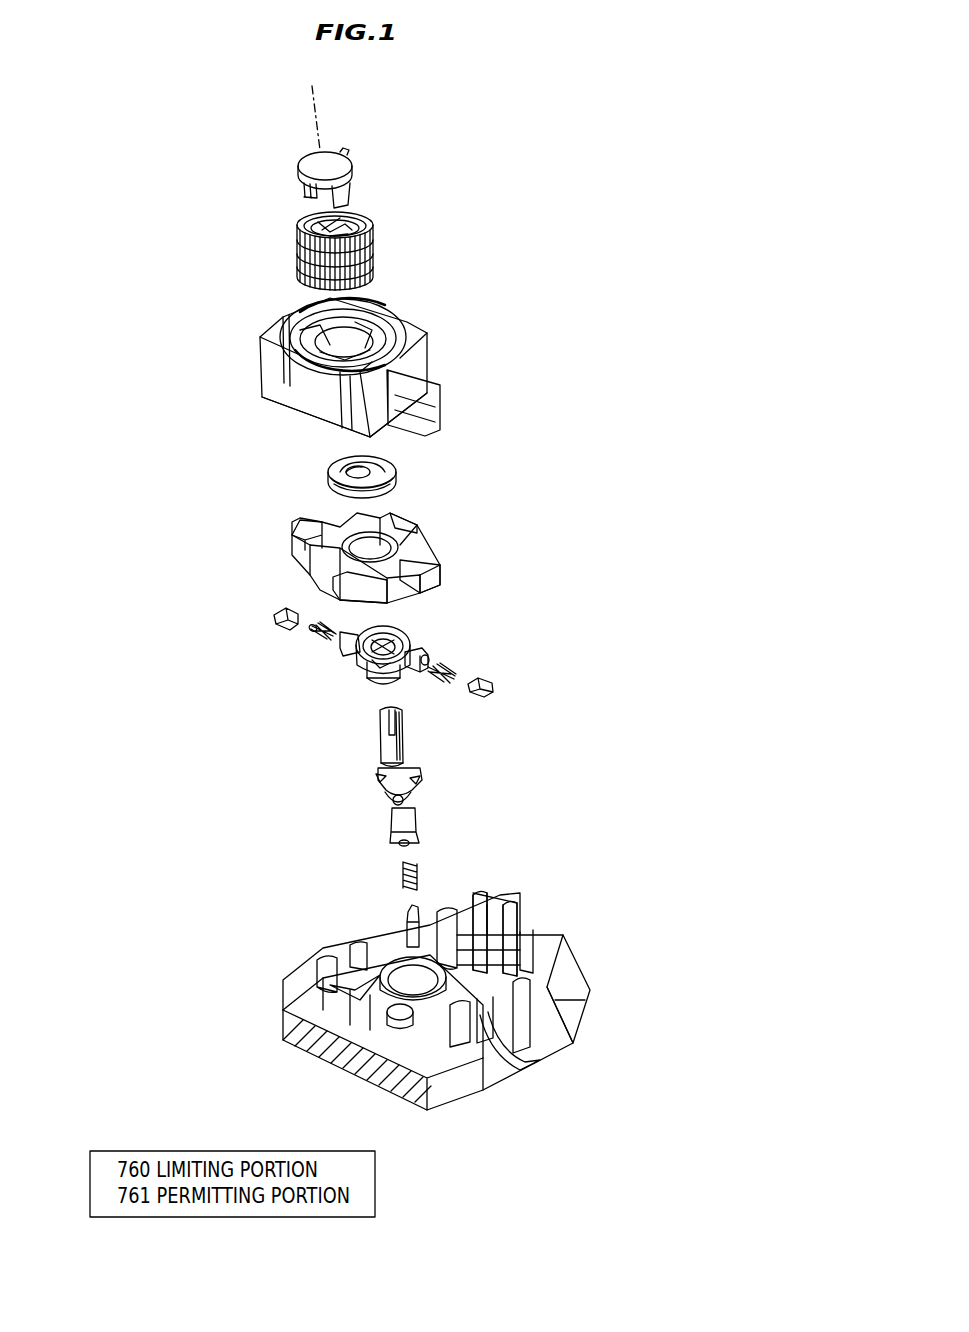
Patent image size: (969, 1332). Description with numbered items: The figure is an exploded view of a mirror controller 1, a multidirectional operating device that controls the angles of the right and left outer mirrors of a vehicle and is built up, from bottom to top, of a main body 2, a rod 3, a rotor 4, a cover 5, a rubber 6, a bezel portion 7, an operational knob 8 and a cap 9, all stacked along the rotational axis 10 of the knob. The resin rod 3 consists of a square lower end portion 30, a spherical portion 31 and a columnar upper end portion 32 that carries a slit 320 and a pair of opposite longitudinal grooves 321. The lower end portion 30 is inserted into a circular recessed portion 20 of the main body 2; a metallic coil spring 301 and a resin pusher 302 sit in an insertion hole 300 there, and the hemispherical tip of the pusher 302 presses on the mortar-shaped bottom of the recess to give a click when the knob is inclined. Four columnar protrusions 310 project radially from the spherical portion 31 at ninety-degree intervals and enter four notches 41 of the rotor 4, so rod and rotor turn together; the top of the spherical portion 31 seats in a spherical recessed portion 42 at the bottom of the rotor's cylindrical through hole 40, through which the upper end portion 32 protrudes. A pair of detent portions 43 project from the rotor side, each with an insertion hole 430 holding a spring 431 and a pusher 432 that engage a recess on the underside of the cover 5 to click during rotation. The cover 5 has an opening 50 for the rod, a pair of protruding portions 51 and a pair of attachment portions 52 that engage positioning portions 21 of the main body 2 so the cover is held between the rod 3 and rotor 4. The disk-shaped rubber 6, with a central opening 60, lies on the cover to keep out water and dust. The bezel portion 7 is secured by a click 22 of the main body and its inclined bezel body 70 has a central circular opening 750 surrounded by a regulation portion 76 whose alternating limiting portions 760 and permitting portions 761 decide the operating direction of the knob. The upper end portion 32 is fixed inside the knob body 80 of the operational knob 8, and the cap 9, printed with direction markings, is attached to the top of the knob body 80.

The mirror controller 1 is at (560, 146).
The main body 2 is at (556, 920).
The rod 3 is at (540, 723).
The rotor 4 is at (533, 614).
The cover 5 is at (450, 526).
The rubber 6 is at (408, 471).
The bezel portion 7 is at (406, 302).
The operational knob 8 is at (388, 242).
The cap 9 is at (366, 161).
The rotational axis 10 is at (313, 103).
The circular recessed portion 20 is at (428, 992).
The positioning portion 21 is at (445, 990).
The click 22 is at (518, 1040).
The lower end portion 30 is at (420, 839).
The spherical portion 31 is at (380, 785).
The upper end portion 32 is at (380, 746).
The through hole 40 is at (400, 641).
The notch 41 is at (378, 666).
The spherical recessed portion 42 is at (378, 681).
The detent portion 43 is at (428, 658).
The opening 50 is at (350, 528).
The protruding portion 51 is at (318, 568).
The attachment portion 52 is at (413, 572).
The opening 60 is at (340, 483).
The bezel body 70 is at (310, 405).
The regulation portion 76 is at (507, 310).
The knob body 80 is at (300, 263).
The insertion hole 300 is at (400, 848).
The spring 301 is at (398, 877).
The pusher 302 is at (405, 930).
The protrusion 310 is at (405, 785).
The slit 320 is at (388, 733).
The longitudinal groove 321 is at (403, 745).
The insertion hole 430 is at (430, 661).
The spring 431 is at (310, 633).
The pusher 432 is at (272, 619).
The opening 750 is at (293, 347).
The limiting portion 760 is at (386, 318).
The permitting portion 761 is at (405, 345).